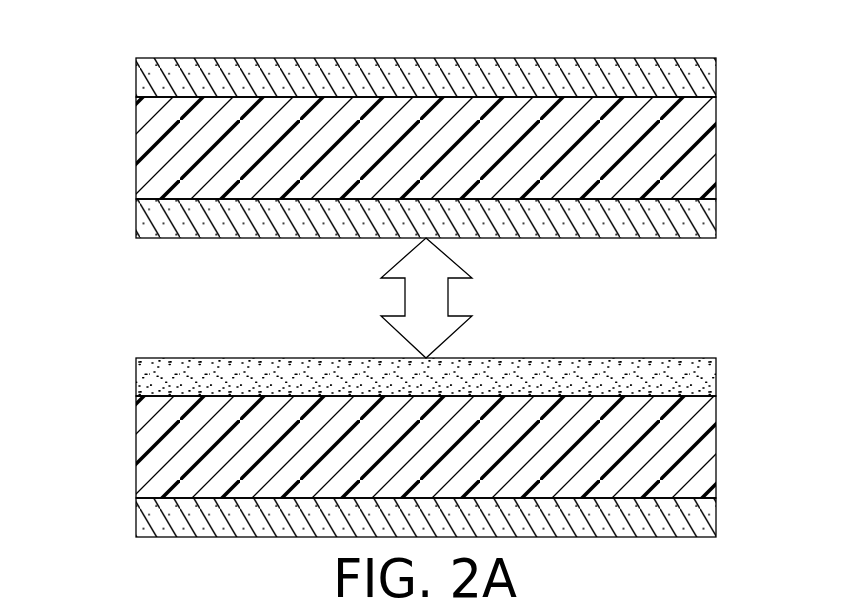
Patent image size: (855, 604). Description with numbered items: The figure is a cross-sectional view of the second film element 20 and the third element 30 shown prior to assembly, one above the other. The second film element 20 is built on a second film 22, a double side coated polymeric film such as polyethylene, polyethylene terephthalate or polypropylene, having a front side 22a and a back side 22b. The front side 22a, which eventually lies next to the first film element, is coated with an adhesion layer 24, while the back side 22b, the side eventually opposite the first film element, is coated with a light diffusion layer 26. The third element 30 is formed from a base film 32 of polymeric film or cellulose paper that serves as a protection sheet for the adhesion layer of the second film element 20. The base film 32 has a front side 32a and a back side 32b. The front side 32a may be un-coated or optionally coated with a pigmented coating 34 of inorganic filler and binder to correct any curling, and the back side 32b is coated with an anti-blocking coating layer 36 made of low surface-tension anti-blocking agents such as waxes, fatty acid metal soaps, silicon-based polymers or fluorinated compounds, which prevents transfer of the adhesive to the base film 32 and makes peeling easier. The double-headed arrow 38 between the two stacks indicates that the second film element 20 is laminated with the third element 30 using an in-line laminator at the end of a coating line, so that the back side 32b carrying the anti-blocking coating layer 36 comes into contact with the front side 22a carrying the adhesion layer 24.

The third element 30 is at (101, 39).
The second film element 20 is at (101, 338).
The pigmented coating 34 is at (717, 80).
The base film 32 is at (700, 165).
The anti-blocking coating layer 36 is at (703, 219).
The front side of base film 32a is at (541, 97).
The back side of base film 32b is at (602, 199).
The double-headed arrow 38 is at (415, 302).
The adhesion layer 24 is at (700, 380).
The second film 22 is at (700, 462).
The light diffusion layer 26 is at (703, 520).
The front side of second film 22a is at (545, 397).
The back side of second film 22b is at (602, 498).